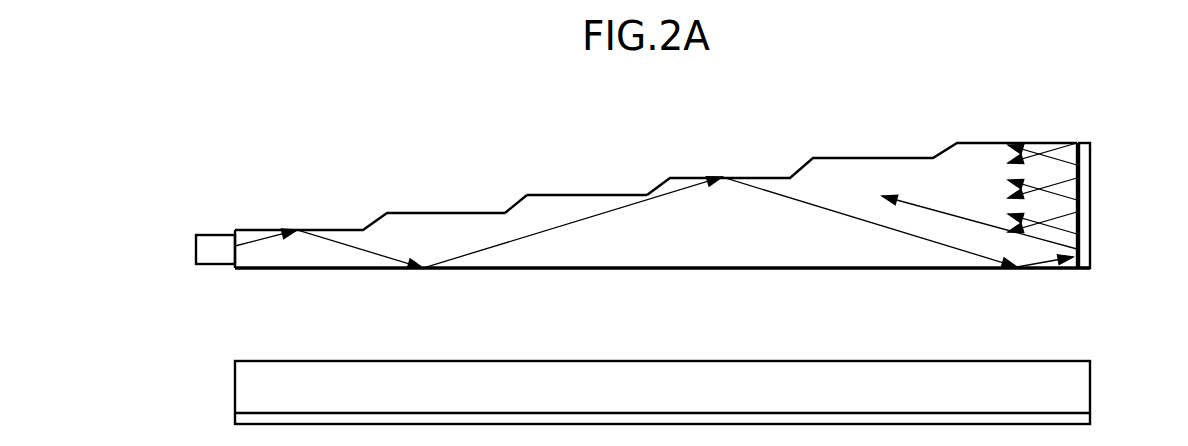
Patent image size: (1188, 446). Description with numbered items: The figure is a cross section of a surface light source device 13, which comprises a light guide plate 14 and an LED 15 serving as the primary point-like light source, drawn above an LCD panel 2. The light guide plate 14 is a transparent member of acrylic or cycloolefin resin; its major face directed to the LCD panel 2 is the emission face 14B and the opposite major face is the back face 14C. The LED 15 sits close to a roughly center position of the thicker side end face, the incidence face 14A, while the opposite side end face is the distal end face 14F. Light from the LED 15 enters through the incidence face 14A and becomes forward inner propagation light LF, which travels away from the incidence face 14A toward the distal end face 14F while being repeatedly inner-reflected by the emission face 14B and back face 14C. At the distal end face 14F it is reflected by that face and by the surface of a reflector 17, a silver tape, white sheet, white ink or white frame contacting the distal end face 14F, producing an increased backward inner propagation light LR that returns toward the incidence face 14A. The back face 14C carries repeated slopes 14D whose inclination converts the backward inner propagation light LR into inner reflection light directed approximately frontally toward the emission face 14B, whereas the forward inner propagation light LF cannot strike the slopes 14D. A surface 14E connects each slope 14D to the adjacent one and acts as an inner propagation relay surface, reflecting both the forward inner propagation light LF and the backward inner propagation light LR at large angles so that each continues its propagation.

The LCD panel 2 is at (1092, 385).
The surface light source device 13 is at (1058, 293).
The light guide plate 14 is at (867, 172).
The incidence face 14A is at (238, 236).
The emission face 14B is at (267, 270).
The back face 14C is at (682, 149).
The slope 14D is at (518, 198).
The surface 14E is at (582, 193).
The distal end face 14F is at (1079, 238).
The LED 15 is at (196, 248).
The reflector 17 is at (1092, 182).
The forward inner propagation light LF is at (626, 207).
The backward inner propagation light LR is at (992, 143).